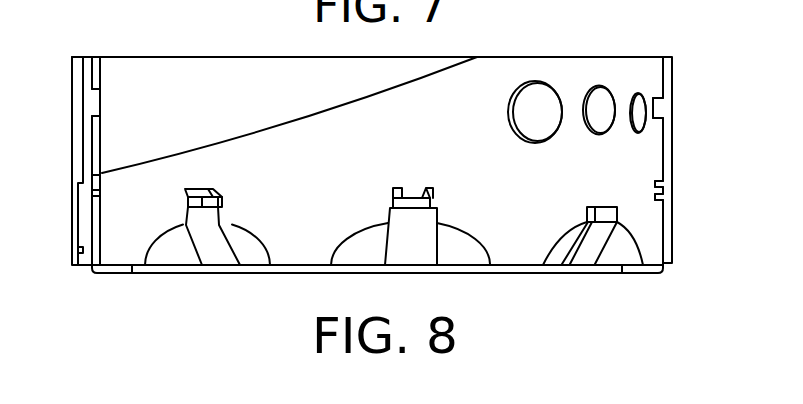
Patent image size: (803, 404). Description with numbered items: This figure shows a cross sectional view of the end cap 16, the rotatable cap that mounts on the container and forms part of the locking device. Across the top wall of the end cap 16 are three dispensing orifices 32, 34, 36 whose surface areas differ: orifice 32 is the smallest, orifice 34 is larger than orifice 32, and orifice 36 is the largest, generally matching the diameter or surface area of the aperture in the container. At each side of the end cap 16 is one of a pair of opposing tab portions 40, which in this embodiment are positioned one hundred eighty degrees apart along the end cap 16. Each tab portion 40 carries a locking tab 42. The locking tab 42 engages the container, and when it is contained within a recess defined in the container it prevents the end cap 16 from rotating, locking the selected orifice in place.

The end cap 16 is at (205, 72).
The orifice 32 is at (640, 100).
The orifice 34 is at (597, 107).
The orifice 36 is at (540, 104).
The tab portion 40 is at (75, 232).
The locking tab 42 is at (100, 108).